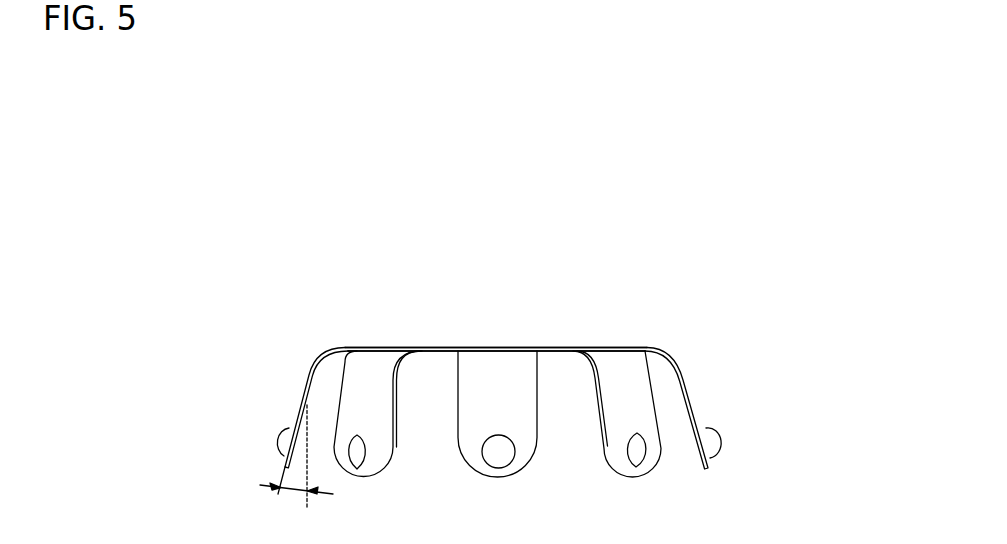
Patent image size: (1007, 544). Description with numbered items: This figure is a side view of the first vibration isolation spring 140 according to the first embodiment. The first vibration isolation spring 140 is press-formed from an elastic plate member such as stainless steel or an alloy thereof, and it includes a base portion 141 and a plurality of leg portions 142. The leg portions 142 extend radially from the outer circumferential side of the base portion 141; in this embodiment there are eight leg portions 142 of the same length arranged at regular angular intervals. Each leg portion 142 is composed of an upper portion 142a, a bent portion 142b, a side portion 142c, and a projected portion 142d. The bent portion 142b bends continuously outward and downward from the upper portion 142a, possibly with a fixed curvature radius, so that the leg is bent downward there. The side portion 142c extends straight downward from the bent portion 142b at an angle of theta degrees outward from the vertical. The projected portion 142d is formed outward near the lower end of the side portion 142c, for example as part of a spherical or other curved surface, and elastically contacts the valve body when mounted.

The first vibration isolation spring 140 is at (718, 166).
The base portion 141 is at (529, 336).
The leg portion 142 is at (197, 295).
The upper portion 142a is at (342, 346).
The bent portion 142b is at (320, 352).
The side portion 142c is at (305, 390).
The projected portion 142d is at (281, 426).